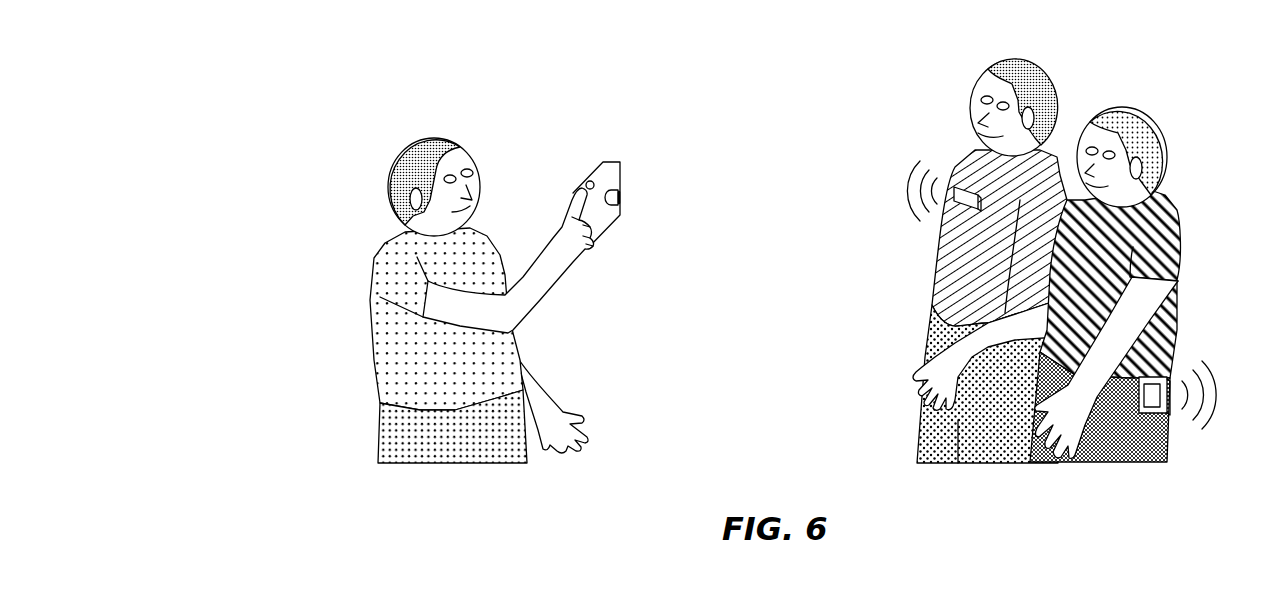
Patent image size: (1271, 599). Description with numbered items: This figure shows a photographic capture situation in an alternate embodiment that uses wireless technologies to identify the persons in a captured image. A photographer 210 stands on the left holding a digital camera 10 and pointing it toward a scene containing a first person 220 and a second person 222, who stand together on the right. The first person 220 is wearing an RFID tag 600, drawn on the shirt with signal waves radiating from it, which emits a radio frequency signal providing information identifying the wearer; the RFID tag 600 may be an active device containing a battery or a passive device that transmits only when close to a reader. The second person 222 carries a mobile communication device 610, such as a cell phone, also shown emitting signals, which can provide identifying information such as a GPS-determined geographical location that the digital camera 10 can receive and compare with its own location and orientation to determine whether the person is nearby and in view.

The digital camera 10 is at (617, 161).
The photographer 210 is at (373, 252).
The first person 220 is at (1000, 59).
The second person 222 is at (1179, 232).
The RFID tag 600 is at (955, 168).
The mobile communication device 610 is at (1177, 367).